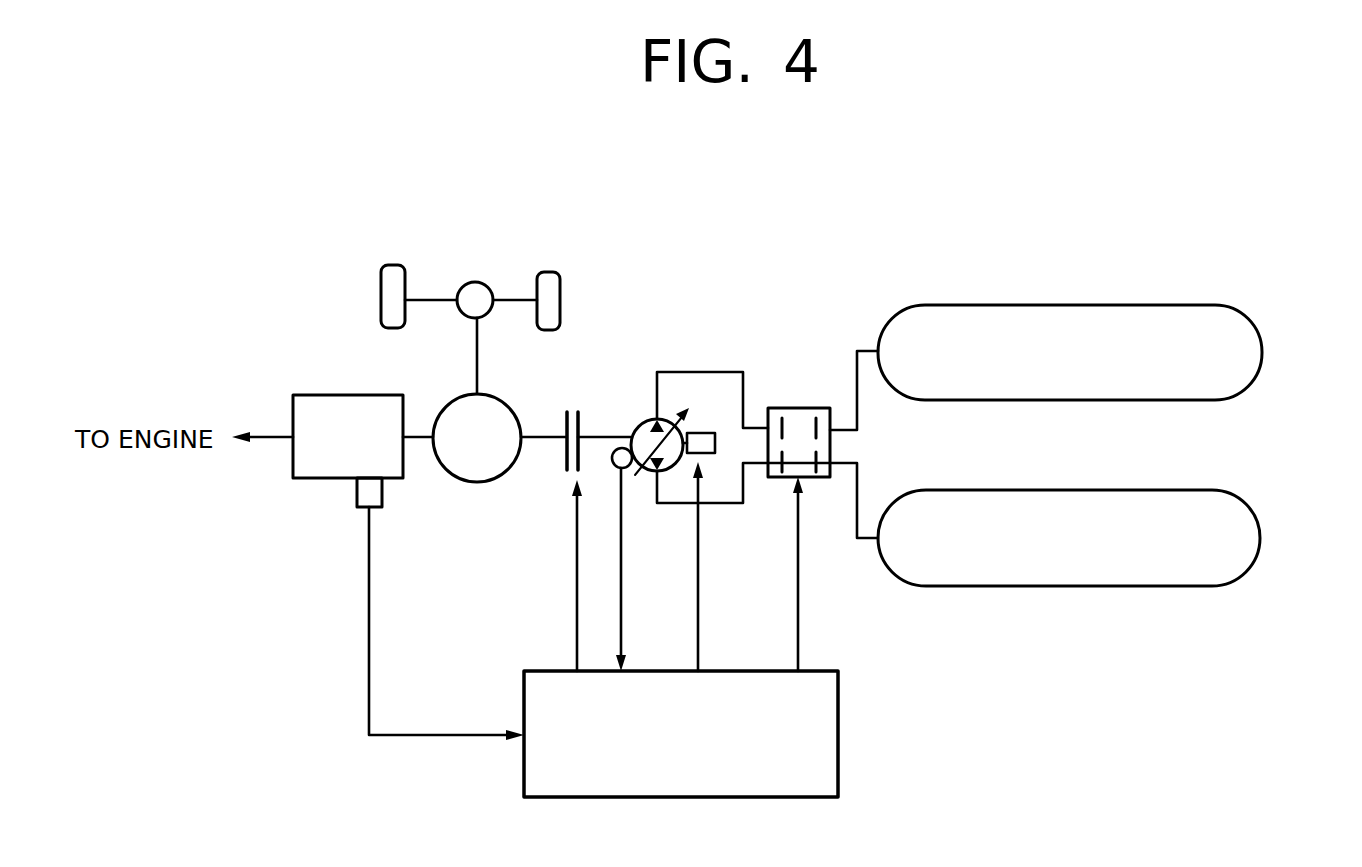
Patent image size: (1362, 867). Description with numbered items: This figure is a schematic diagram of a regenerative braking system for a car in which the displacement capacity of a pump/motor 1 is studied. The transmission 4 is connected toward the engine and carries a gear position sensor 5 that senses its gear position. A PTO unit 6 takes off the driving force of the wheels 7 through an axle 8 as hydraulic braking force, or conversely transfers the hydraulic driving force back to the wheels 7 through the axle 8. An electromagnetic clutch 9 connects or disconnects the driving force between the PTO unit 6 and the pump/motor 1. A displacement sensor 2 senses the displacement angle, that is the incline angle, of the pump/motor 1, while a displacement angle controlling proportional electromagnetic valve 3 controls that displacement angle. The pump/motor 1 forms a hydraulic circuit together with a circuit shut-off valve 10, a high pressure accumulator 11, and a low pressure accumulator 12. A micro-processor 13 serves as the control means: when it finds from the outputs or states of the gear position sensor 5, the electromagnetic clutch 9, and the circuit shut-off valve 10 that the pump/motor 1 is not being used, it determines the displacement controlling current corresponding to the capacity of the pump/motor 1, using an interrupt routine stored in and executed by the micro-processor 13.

The pump/motor 1 is at (634, 418).
The displacement sensor 2 is at (613, 470).
The displacement angle controlling proportional electromagnetic valve 3 is at (700, 433).
The transmission 4 is at (320, 395).
The gear position sensor 5 is at (357, 495).
The PTO unit 6 is at (472, 482).
The wheels 7 is at (388, 265).
The axle 8 is at (473, 282).
The electromagnetic clutch 9 is at (572, 412).
The circuit shut-off valve 10 is at (800, 408).
The high pressure accumulator 11 is at (1260, 378).
The low pressure accumulator 12 is at (1258, 565).
The micro-processor 13 is at (838, 736).